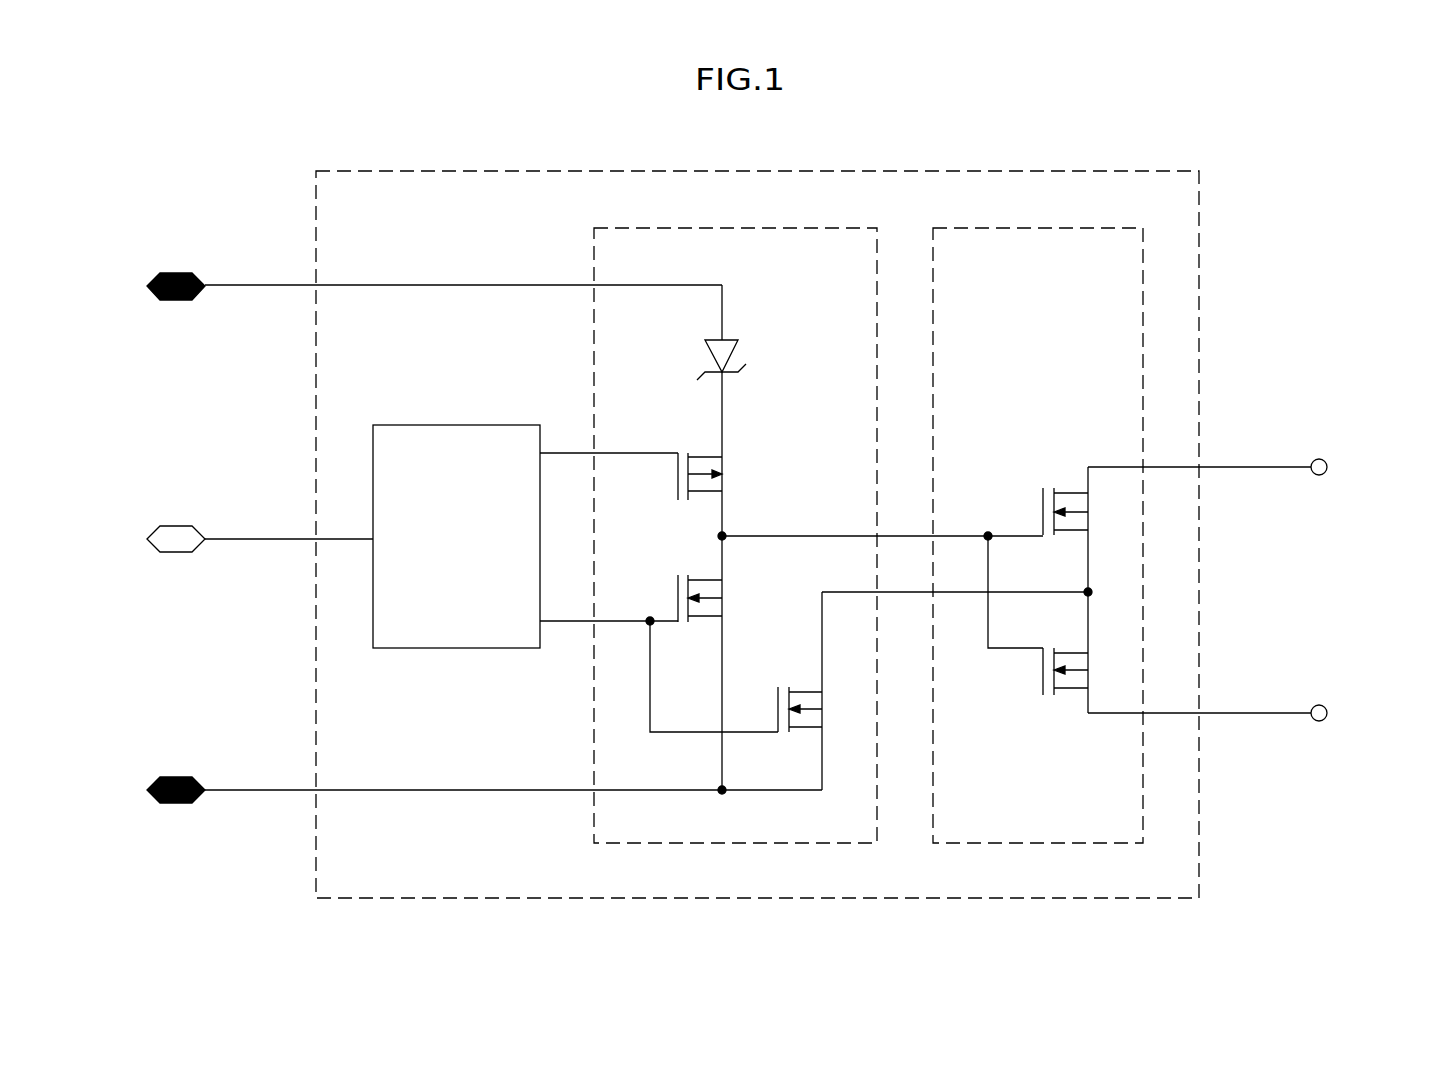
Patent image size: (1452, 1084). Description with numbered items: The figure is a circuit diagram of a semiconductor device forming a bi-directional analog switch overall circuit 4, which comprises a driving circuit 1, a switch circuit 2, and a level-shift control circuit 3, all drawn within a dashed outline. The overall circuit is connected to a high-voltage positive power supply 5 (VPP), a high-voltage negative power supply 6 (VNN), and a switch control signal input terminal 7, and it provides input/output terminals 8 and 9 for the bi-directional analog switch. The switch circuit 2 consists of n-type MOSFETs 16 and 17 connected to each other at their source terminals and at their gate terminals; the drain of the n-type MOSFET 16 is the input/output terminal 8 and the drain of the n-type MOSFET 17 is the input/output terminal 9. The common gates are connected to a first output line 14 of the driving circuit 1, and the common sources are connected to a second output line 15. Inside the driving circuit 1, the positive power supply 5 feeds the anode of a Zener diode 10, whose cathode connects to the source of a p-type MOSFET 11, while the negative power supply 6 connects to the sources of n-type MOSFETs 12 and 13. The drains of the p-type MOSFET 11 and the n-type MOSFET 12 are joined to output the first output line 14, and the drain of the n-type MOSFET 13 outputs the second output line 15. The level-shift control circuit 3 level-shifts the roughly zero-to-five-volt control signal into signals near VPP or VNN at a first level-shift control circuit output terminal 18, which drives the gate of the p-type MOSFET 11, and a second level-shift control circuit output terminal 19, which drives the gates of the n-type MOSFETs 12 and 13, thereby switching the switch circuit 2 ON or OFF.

The driving circuit 1 is at (780, 227).
The switch circuit 2 is at (1067, 227).
The level-shift control circuit 3 is at (473, 424).
The bi-directional analog switch overall circuit 4 is at (873, 170).
The high-voltage positive power supply 5 is at (183, 302).
The high-voltage negative power supply 6 is at (183, 805).
The switch control signal input terminal 7 is at (183, 554).
The input/output terminal 8 is at (1322, 477).
The input/output terminal 9 is at (1322, 723).
The Zener diode 10 is at (742, 350).
The p-type MOSFET 11 is at (675, 488).
The n-type MOSFET 12 is at (675, 585).
The n-type MOSFET 13 is at (795, 683).
The first output line 14 is at (902, 532).
The second output line 15 is at (902, 595).
The n-type MOSFET 16 is at (1040, 497).
The n-type MOSFET 17 is at (1040, 683).
The first level-shift control circuit output terminal 18 is at (566, 451).
The second level-shift control circuit output terminal 19 is at (567, 623).